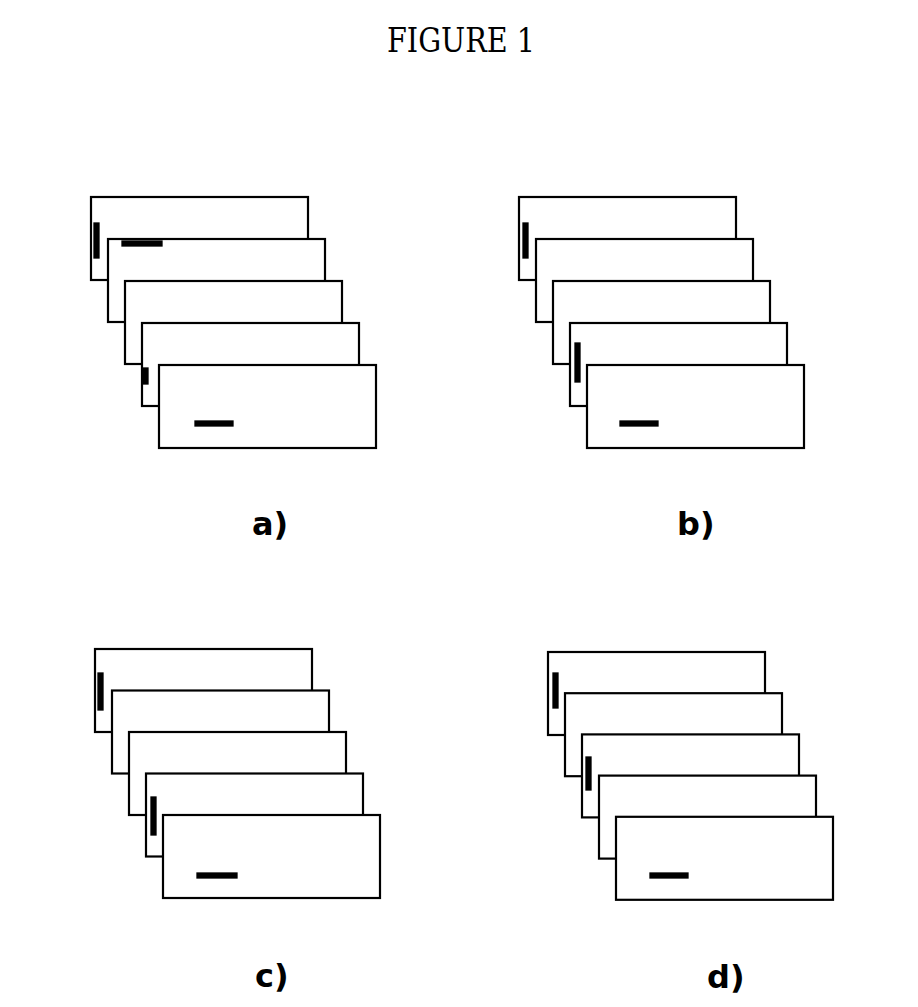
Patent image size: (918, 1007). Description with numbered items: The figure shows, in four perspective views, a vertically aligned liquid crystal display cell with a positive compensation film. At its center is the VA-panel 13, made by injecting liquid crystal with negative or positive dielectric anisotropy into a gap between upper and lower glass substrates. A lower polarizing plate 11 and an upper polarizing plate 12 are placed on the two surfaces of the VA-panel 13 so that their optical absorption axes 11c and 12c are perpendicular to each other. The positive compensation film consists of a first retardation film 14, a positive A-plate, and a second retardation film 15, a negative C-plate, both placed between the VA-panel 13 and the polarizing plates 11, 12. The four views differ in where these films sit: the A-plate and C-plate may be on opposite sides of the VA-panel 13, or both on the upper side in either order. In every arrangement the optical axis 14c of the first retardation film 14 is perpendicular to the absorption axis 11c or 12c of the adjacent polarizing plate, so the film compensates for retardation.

In FIG. 1a, the lower polarizing plate 11 is at (309, 213).
In FIG. 1b, the lower polarizing plate 11 is at (737, 213).
In FIG. 1c, the lower polarizing plate 11 is at (312, 665).
In FIG. 1d, the lower polarizing plate 11 is at (765, 667).
In FIG. 1a, the upper polarizing plate 12 is at (376, 388).
In FIG. 1b, the upper polarizing plate 12 is at (804, 388).
In FIG. 1c, the upper polarizing plate 12 is at (380, 843).
In FIG. 1d, the upper polarizing plate 12 is at (833, 845).
In FIG. 1a, the vertically aligned panel 13 is at (342, 296).
In FIG. 1b, the vertically aligned panel 13 is at (770, 296).
In FIG. 1c, the vertically aligned panel 13 is at (329, 705).
In FIG. 1d, the vertically aligned panel 13 is at (782, 708).
In FIG. 1a, the first retardation film 14 is at (325, 258).
In FIG. 1b, the first retardation film 14 is at (787, 343).
In FIG. 1c, the first retardation film 14 is at (363, 795).
In FIG. 1d, the first retardation film 14 is at (799, 752).
In FIG. 1a, the second retardation film 15 is at (359, 343).
In FIG. 1b, the second retardation film 15 is at (753, 258).
In FIG. 1c, the second retardation film 15 is at (346, 755).
In FIG. 1d, the second retardation film 15 is at (816, 798).
In FIG. 1a, the optical absorption axis 11c is at (93, 242).
In FIG. 1b, the optical absorption axis 11c is at (522, 242).
In FIG. 1c, the optical absorption axis 11c is at (97, 692).
In FIG. 1d, the optical absorption axis 11c is at (552, 693).
In FIG. 1a, the optical absorption axis 12c is at (214, 426).
In FIG. 1b, the optical absorption axis 12c is at (639, 426).
In FIG. 1c, the optical absorption axis 12c is at (215, 878).
In FIG. 1d, the optical absorption axis 12c is at (668, 878).
In FIG. 1a, the optical axis 14c is at (122, 243).
In FIG. 1b, the optical axis 14c is at (575, 372).
In FIG. 1c, the optical axis 14c is at (150, 820).
In FIG. 1d, the optical axis 14c is at (586, 780).